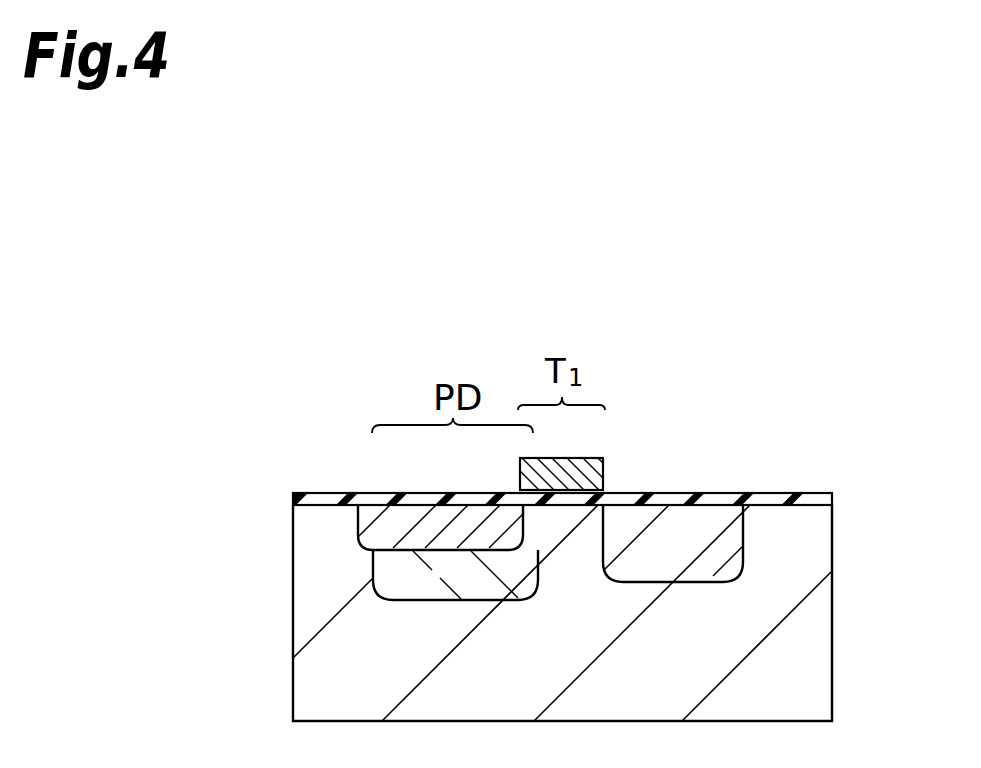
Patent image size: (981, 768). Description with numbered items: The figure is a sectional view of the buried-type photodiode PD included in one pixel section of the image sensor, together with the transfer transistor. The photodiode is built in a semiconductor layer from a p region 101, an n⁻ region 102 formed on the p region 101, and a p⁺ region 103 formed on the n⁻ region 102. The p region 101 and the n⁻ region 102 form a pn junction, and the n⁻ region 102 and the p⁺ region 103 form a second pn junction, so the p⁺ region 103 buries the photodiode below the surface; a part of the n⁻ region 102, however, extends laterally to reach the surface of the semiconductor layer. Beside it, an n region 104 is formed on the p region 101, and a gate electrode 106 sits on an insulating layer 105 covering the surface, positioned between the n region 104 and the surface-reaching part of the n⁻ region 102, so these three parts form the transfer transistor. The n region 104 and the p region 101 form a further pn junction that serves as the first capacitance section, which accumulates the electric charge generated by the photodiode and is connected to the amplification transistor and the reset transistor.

The p region 101 is at (313, 651).
The n⁻ region 102 is at (378, 598).
The p⁺ region 103 is at (367, 528).
The n region 104 is at (717, 580).
The insulating layer 105 is at (294, 498).
The gate electrode 106 is at (533, 472).